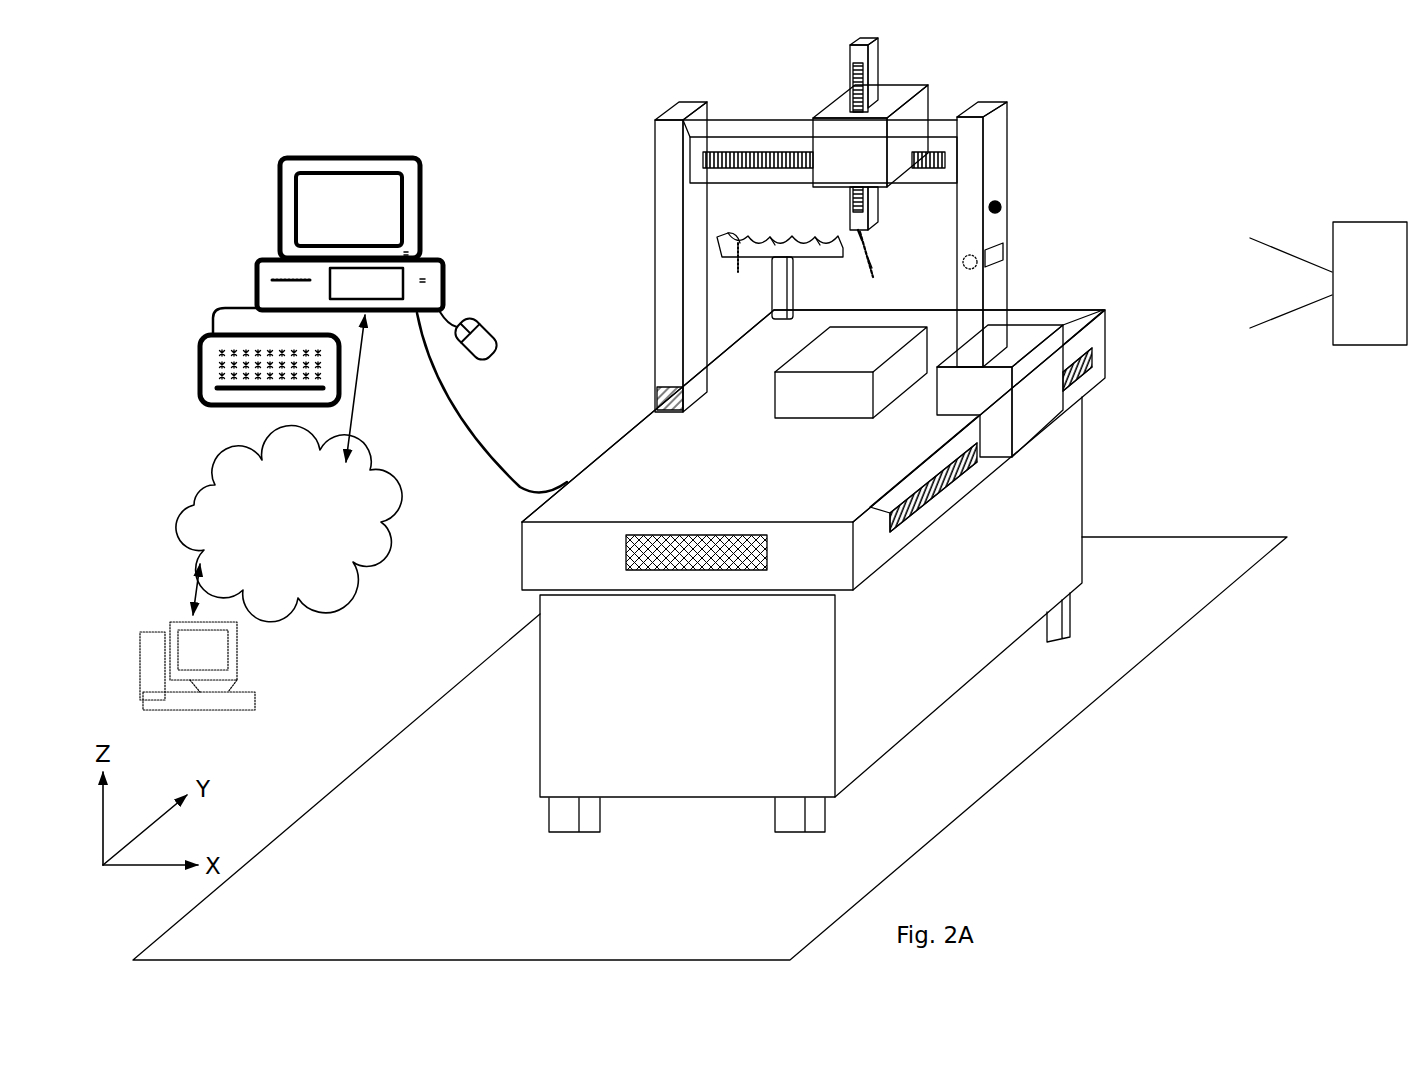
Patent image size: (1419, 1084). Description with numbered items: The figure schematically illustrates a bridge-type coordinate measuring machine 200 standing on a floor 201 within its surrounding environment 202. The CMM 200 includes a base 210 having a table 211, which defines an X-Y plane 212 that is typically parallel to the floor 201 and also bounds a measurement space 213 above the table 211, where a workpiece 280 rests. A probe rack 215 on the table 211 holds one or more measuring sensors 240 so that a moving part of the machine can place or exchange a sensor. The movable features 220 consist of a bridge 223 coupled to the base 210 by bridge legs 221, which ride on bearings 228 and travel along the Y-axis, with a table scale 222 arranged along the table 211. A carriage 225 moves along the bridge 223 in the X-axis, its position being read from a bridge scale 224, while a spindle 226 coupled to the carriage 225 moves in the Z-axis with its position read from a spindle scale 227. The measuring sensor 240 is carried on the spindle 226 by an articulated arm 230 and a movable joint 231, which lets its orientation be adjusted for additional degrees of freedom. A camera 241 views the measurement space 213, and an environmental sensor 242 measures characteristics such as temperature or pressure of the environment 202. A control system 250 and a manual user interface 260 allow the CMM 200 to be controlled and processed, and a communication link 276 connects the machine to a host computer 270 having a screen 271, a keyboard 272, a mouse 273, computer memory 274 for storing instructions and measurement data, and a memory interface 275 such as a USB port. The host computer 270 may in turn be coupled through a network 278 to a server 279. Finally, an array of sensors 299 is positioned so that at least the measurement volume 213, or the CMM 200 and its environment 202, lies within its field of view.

The coordinate measuring machine 200 is at (625, 127).
The floor 201 is at (483, 735).
The environment 202 is at (578, 185).
The base 210 is at (713, 702).
The table 211 is at (643, 465).
The X-Y plane 212 is at (678, 443).
The measurement space 213 is at (808, 430).
The probe rack 215 is at (790, 230).
The movable features 220 is at (897, 247).
The bridge legs 221 is at (998, 143).
The table scale 222 is at (1105, 340).
The bridge 223 is at (737, 128).
The bridge scale 224 is at (803, 152).
The carriage 225 is at (824, 169).
The spindle 226 is at (877, 62).
The spindle scale 227 is at (848, 60).
The bearing 228 is at (658, 392).
The arm 230 is at (870, 243).
The movable joint 231 is at (850, 240).
The measuring sensor 240 is at (737, 263).
The camera 241 is at (980, 277).
The environmental sensor 242 is at (1003, 210).
The control system 250 is at (625, 558).
The manual user interface 260 is at (1005, 258).
The host computer 270 is at (325, 298).
The screen 271 is at (329, 225).
The keyboard 272 is at (197, 347).
The mouse 273 is at (492, 322).
The computer memory 274 is at (387, 297).
The memory interface 275 is at (265, 281).
The communication link 276 is at (435, 372).
The network 278 is at (273, 530).
The server 279 is at (140, 648).
The workpiece 280 is at (826, 364).
The array of sensors 299 is at (1328, 283).